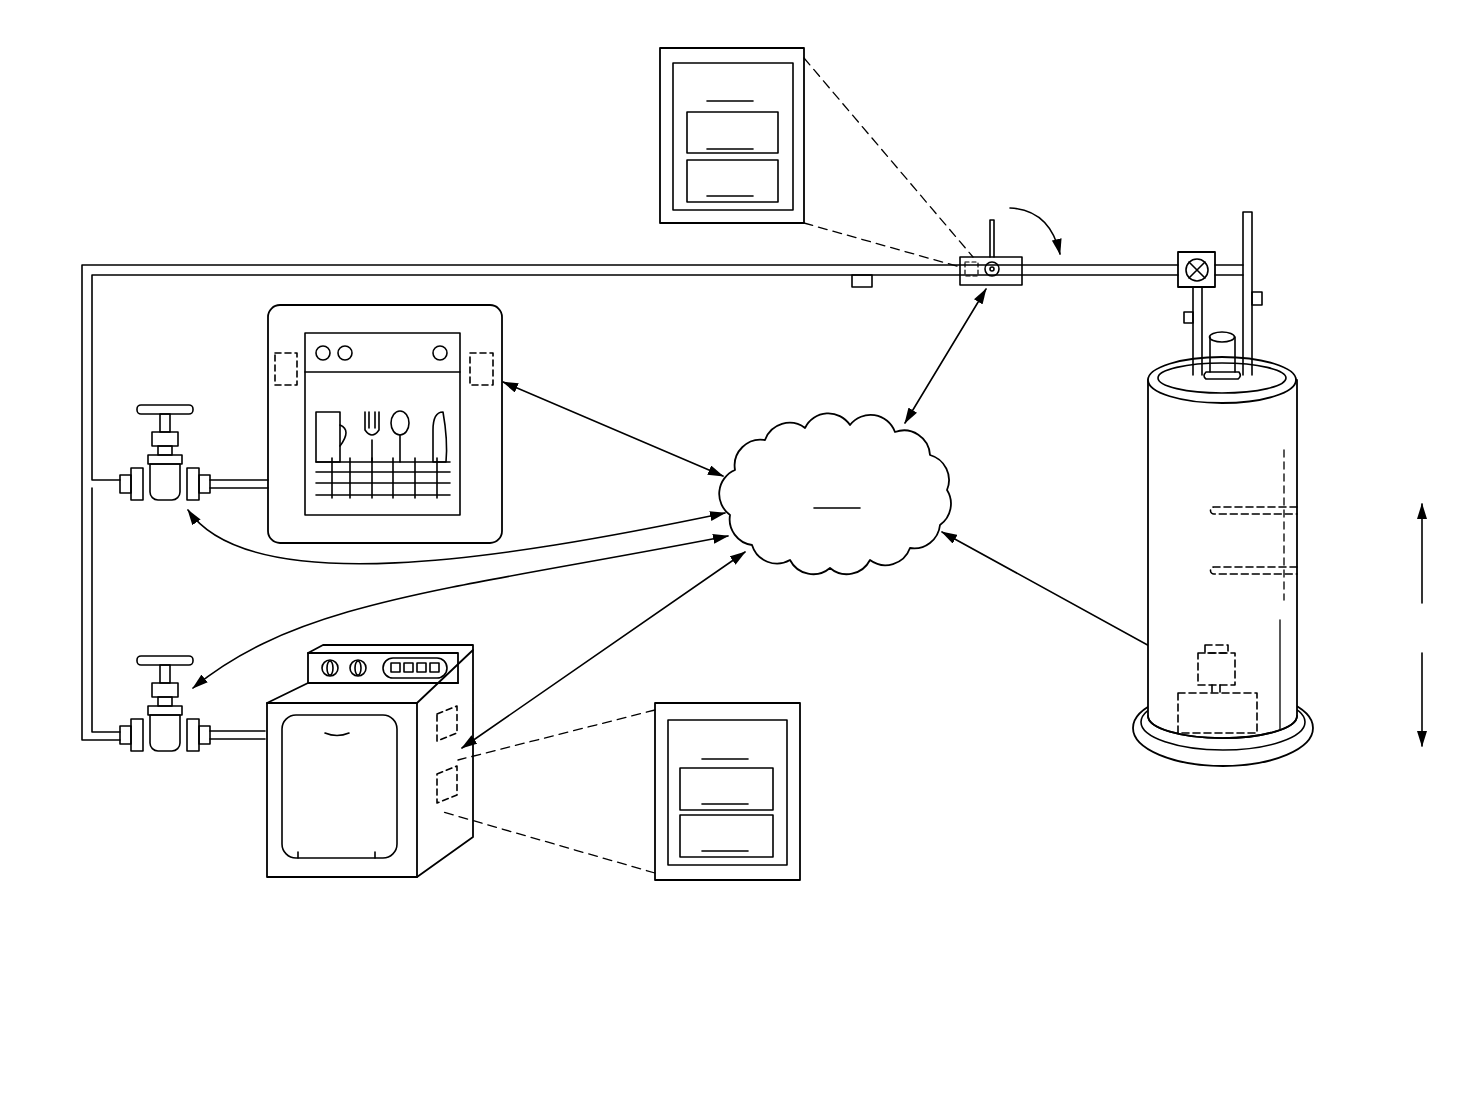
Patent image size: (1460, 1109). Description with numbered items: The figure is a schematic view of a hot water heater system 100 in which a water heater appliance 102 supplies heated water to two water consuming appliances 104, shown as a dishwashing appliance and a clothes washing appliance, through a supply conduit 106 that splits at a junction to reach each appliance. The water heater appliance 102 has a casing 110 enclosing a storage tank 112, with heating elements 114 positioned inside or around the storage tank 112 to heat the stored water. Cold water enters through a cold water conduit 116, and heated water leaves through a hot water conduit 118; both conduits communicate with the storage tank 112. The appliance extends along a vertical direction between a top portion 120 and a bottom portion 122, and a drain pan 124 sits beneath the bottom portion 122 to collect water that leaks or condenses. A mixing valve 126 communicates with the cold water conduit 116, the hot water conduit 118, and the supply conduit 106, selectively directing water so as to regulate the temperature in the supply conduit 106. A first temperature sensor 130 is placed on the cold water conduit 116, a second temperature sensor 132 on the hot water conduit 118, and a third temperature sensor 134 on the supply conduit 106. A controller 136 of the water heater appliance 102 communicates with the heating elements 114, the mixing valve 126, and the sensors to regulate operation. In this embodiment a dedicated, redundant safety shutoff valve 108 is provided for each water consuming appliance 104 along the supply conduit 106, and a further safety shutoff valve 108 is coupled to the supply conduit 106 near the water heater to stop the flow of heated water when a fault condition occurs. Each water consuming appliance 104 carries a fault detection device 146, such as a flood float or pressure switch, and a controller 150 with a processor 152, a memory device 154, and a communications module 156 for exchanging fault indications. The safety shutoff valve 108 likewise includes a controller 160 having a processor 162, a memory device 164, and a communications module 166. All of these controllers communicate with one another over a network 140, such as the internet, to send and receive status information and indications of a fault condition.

The hot water heater system 100 is at (766, 479).
The water heater appliance 102 is at (1365, 469).
The water consuming appliance 104 is at (267, 430).
The supply conduit 106 is at (687, 276).
The safety shutoff valve 108 is at (170, 403).
The casing 110 is at (1147, 518).
The storage tank 112 is at (1244, 465).
The heating elements 114 is at (1265, 578).
The cold water conduit 116 is at (1252, 335).
The hot water conduit 118 is at (1192, 335).
The top portion 120 is at (1272, 368).
The bottom portion 122 is at (1224, 769).
The drain pan 124 is at (1267, 753).
The mixing valve 126 is at (1198, 252).
The first temperature sensor 130 is at (1262, 298).
The second temperature sensor 132 is at (1184, 316).
The third temperature sensor 134 is at (858, 288).
The controller 136 is at (1235, 670).
The network 140 is at (835, 493).
The fault detection device 146 is at (273, 370).
The controller 150 is at (483, 353).
The processor 152 is at (725, 744).
The memory device 154 is at (726, 789).
The communications module 156 is at (726, 836).
The controller 160 is at (660, 162).
The processor 162 is at (730, 86).
The memory device 164 is at (732, 132).
The communications module 166 is at (732, 181).